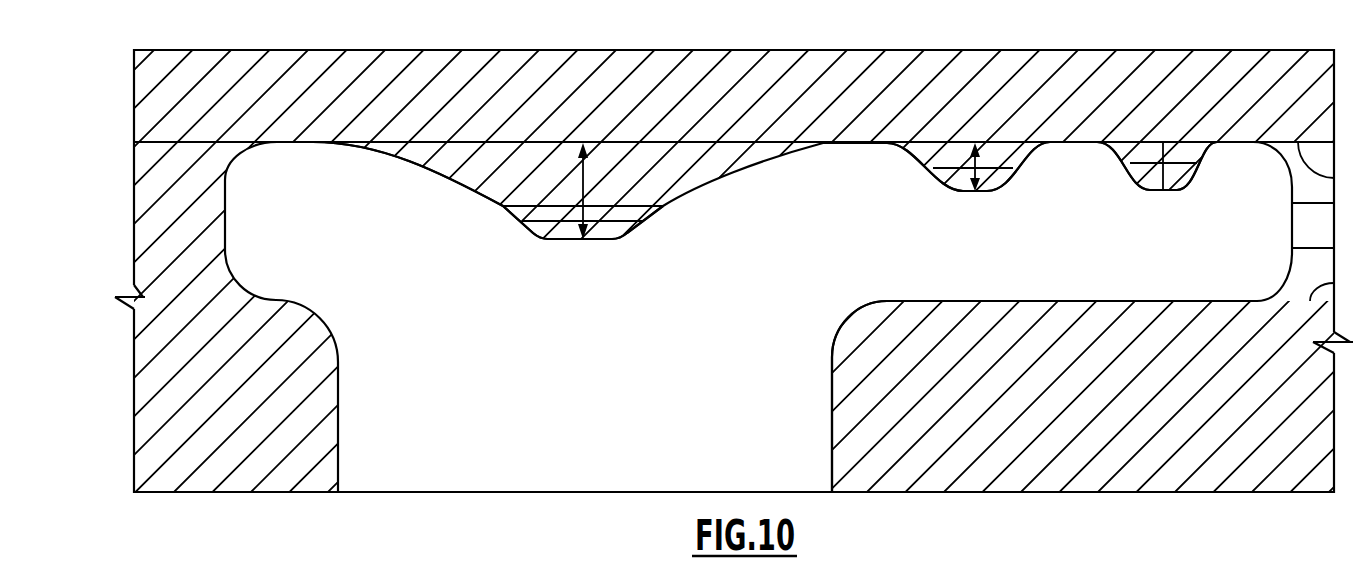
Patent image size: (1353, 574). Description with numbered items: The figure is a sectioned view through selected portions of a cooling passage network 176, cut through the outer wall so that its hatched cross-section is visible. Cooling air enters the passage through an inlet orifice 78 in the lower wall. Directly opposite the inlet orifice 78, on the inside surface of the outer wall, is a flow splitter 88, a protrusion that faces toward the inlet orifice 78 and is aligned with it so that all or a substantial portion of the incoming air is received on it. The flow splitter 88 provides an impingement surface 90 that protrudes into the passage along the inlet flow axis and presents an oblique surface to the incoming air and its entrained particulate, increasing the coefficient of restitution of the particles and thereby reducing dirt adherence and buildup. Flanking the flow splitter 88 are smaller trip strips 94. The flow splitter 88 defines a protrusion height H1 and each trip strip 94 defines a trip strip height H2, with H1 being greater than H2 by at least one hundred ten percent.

The inlet orifice 78 is at (832, 455).
The flow splitter 88 is at (722, 172).
The impingement surface 90 is at (480, 183).
The trip strip 94 is at (933, 166).
The cooling passage network 176 is at (1074, 141).
The protrusion height H1 is at (583, 190).
The trip strip height H2 is at (976, 165).